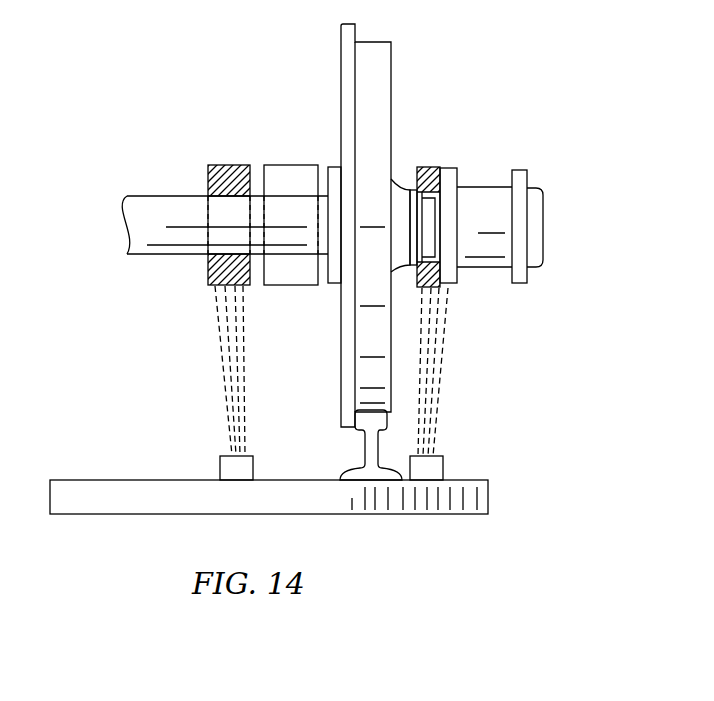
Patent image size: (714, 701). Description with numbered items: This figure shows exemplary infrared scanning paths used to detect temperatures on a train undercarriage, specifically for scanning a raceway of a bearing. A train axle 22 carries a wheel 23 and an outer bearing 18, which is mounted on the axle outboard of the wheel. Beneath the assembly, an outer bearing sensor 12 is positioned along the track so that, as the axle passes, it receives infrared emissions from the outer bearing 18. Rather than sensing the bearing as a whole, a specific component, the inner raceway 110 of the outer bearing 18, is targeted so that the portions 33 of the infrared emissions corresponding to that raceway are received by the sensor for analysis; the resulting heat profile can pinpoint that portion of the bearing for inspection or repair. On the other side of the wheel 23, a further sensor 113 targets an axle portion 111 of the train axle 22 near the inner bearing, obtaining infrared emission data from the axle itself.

The outer bearing sensor 12 is at (443, 468).
The outer bearing 18 is at (485, 187).
The train axle 22 is at (185, 254).
The wheel 23 is at (341, 81).
The portions of IR emissions 33 is at (443, 367).
The inner raceway 110 is at (461, 301).
The axle portion 111 is at (207, 218).
The sensor 113 is at (220, 470).